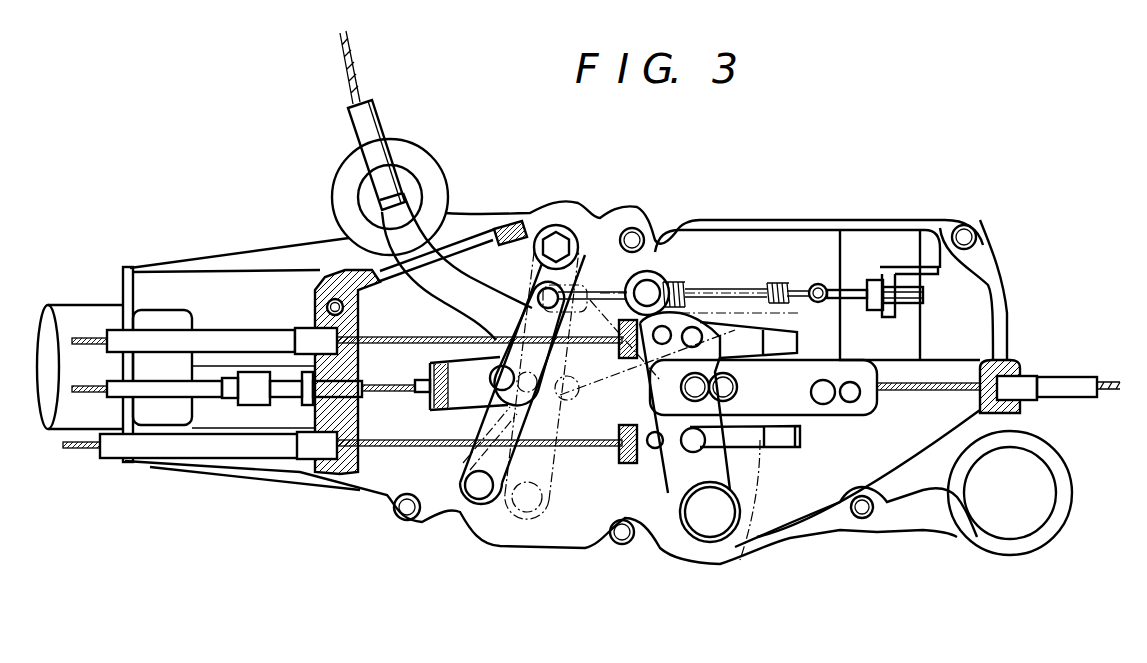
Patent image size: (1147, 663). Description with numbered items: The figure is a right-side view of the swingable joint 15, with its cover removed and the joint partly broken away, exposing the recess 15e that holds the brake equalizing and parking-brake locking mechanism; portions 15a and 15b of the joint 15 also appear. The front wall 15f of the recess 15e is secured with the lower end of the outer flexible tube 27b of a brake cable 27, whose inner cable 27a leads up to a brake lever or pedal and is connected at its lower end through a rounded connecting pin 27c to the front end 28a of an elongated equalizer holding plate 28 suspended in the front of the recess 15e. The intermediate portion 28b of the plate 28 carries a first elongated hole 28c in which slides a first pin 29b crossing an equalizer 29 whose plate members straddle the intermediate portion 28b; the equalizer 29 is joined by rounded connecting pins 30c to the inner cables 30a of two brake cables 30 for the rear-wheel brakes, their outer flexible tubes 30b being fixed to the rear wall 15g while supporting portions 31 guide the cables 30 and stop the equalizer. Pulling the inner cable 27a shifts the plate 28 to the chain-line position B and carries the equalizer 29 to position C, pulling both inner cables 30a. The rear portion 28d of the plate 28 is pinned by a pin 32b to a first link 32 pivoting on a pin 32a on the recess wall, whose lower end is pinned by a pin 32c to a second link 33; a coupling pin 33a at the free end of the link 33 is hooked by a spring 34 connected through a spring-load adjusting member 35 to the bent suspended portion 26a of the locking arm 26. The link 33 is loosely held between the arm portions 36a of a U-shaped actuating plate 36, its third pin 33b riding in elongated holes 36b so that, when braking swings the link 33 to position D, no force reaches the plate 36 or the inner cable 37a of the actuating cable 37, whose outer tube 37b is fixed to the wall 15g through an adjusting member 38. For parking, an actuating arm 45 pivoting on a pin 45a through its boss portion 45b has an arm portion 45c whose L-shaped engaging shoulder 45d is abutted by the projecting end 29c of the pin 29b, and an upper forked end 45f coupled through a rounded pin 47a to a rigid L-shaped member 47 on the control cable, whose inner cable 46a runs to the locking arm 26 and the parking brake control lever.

The joint 15 is at (840, 217).
The eye boss of housing 15a is at (1028, 545).
The cable boss of housing 15b is at (418, 158).
The recess 15e is at (795, 518).
The front wall 15f is at (1000, 289).
The rear wall 15g is at (322, 450).
The locking arm 26 is at (930, 264).
The bent and suspended portion 26a is at (914, 312).
The brake cable 27 is at (1068, 374).
The inner cable 27a is at (1112, 380).
The outer flexible tube 27b is at (1077, 392).
The rounded connecting pin 27c is at (825, 398).
The equalizer holding plate 28 is at (803, 370).
The front end 28a is at (813, 416).
The intermediate portion 28b is at (748, 405).
The first elongated hole 28c is at (765, 435).
The rear portion 28d is at (595, 470).
The equalizer 29 is at (715, 330).
The first pin 29b is at (735, 479).
The projecting end 29c is at (810, 287).
The brake cables 30 is at (220, 324).
The inner cables 30a is at (410, 340).
The outer flexible tubes 30b is at (258, 336).
The rounded connecting pins 30c is at (668, 328).
The supporting portions 31 is at (633, 228).
The first link 32 is at (555, 505).
The pin 32a is at (556, 234).
The pin 32b is at (505, 512).
The pin 32c is at (467, 495).
The second link 33 is at (448, 458).
The coupling pin 33a is at (508, 228).
The third pin 33b is at (488, 389).
The spring 34 is at (776, 287).
The adjusting member 35 is at (840, 289).
The actuating plate 36 is at (455, 390).
The arm portions 36a is at (500, 337).
The third elongated holes 36b is at (560, 291).
The actuating cable 37 is at (161, 374).
The inner cable 37a is at (375, 380).
The outer flexible tube 37b is at (203, 397).
The adjusting member 38 is at (287, 397).
The actuating arm 45 is at (774, 520).
The pin 45a is at (710, 523).
The boss portion 45b is at (703, 543).
The arm portion 45c is at (655, 500).
The engaging shoulder portion 45d is at (630, 463).
The upper forked end 45f is at (653, 283).
The inner cable 46a is at (723, 287).
The L-shaped member 47 is at (360, 205).
The rounded connecting pin 47a is at (655, 283).
The chain line B is at (878, 405).
The chain line C is at (690, 516).
The chain line D is at (522, 527).